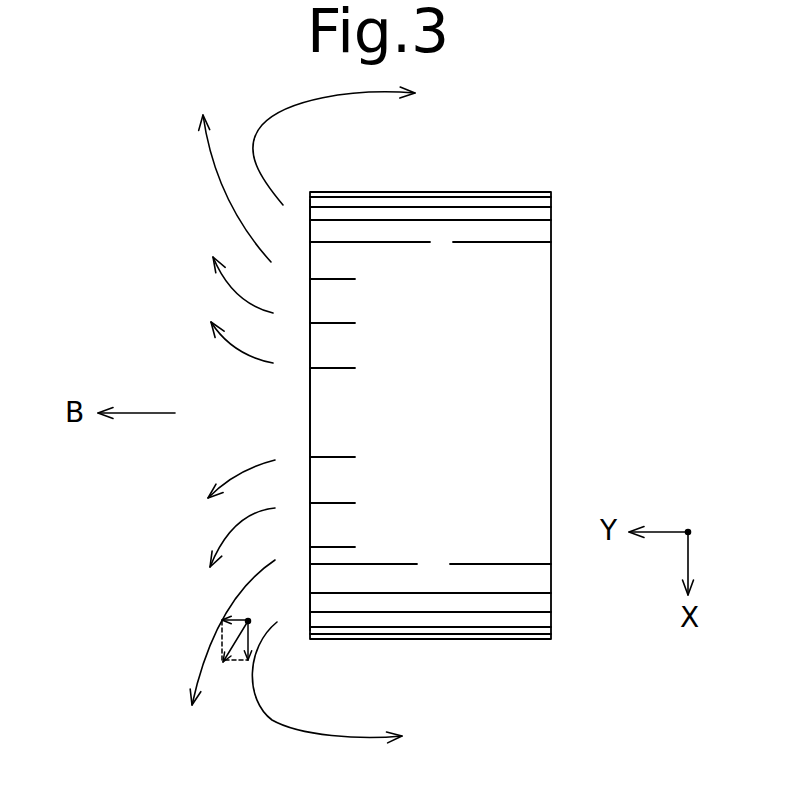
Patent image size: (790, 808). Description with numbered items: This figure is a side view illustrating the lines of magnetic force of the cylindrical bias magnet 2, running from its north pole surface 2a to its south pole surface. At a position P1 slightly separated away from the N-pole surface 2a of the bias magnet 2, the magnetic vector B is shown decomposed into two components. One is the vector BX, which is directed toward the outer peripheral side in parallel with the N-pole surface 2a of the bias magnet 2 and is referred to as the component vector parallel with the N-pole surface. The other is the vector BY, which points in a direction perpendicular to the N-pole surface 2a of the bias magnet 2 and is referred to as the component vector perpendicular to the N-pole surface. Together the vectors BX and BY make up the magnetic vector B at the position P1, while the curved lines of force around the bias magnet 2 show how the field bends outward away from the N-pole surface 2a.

The bias magnet 2 is at (456, 202).
The north pole surface 2a is at (305, 620).
The position P1 is at (254, 620).
The magnetic vector B is at (236, 646).
The component vector parallel with the N-pole surface BX is at (250, 640).
The component vector perpendicular to the N-pole surface BY is at (246, 620).